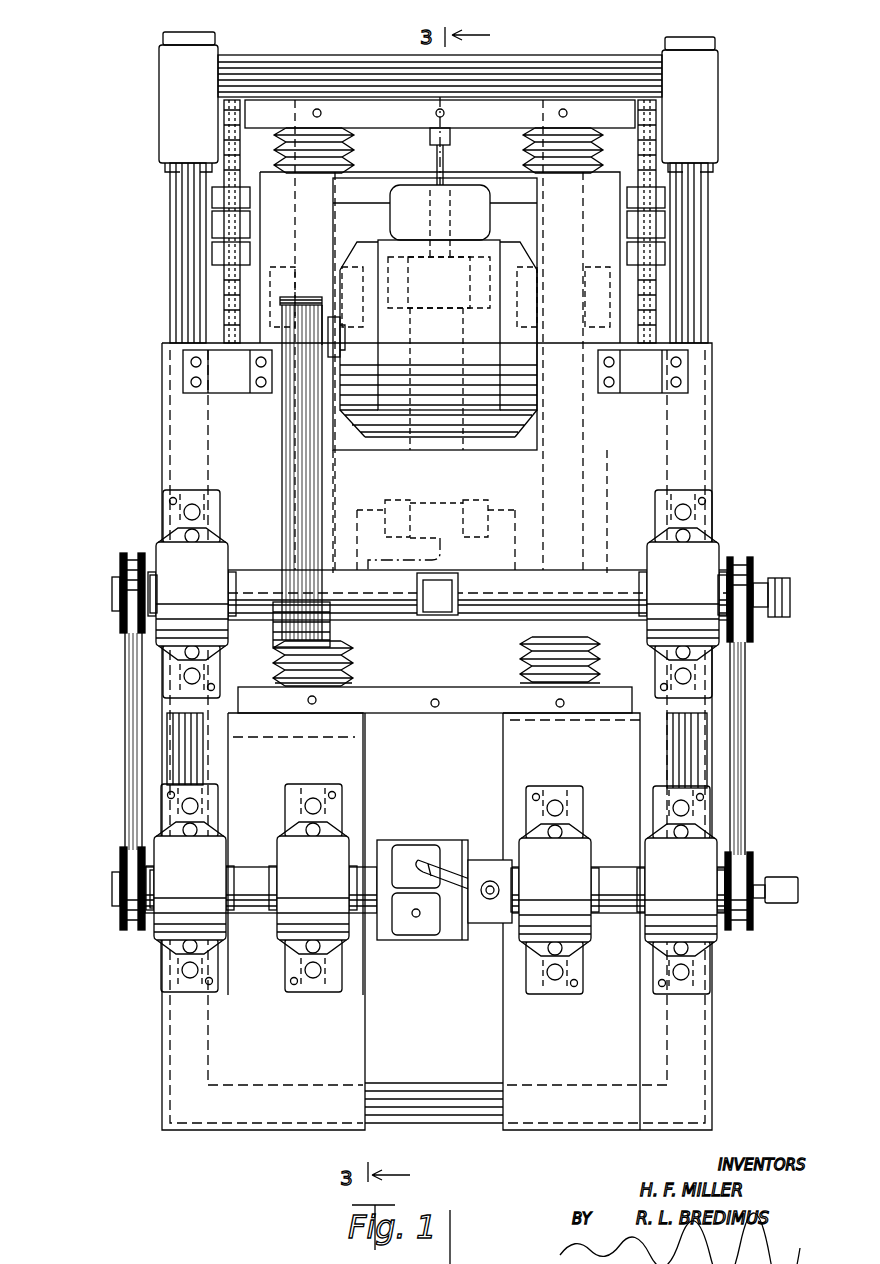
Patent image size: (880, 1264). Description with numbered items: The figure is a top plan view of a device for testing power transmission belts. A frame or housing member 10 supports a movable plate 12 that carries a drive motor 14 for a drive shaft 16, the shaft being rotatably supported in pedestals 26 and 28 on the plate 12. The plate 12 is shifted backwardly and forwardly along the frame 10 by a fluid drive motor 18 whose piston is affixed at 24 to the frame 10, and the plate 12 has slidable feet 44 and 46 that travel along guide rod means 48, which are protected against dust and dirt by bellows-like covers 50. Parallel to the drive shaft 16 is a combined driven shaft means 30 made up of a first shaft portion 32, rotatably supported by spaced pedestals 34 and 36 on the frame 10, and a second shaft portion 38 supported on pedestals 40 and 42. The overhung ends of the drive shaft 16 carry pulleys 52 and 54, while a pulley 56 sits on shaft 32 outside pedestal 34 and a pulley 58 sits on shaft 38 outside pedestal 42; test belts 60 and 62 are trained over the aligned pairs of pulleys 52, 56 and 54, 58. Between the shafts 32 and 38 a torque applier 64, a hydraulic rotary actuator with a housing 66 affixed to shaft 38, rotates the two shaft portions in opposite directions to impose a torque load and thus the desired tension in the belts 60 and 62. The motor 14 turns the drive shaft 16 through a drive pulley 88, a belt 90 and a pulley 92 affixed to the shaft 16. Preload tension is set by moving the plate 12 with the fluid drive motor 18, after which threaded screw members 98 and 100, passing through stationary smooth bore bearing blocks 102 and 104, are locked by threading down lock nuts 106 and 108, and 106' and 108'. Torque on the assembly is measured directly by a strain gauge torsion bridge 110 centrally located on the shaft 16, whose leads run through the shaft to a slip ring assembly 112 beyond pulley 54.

The frame or housing member 10 is at (570, 70).
The movable plate 12 is at (712, 440).
The drive motor 14 is at (450, 349).
The drive shaft 16 is at (500, 621).
The fluid drive motor 18 is at (463, 478).
The piston attachment point 24 is at (446, 124).
The pedestal 26 is at (180, 563).
The pedestal 28 is at (705, 640).
The combined driven shaft means 30 is at (474, 940).
The first shaft portion 32 is at (255, 920).
The pedestal 34 is at (176, 935).
The pedestal 36 is at (300, 858).
The second shaft portion 38 is at (620, 920).
The pedestal 40 is at (535, 925).
The pedestal 42 is at (672, 860).
The slidable foot 44 is at (278, 522).
The slidable foot 46 is at (279, 265).
The guide rod means 48 is at (333, 479).
The bellows-like cover 50 is at (352, 674).
The pulley 52 is at (128, 556).
The pulley 54 is at (755, 628).
The pulley 56 is at (114, 935).
The pulley 58 is at (753, 925).
The transmission belt 60 is at (125, 737).
The transmission belt 62 is at (744, 742).
The torque applier 64 is at (426, 835).
The housing 66 is at (783, 578).
The drive pulley 88 is at (283, 392).
The belt 90 is at (290, 456).
The pulley 92 is at (336, 636).
The threaded screw member 98 is at (216, 291).
The threaded screw member 100 is at (655, 292).
The bearing block 102 is at (212, 223).
The bearing block 104 is at (665, 225).
The lock nut 106 is at (176, 250).
The lock nut 106' is at (708, 254).
The lock nut 108 is at (176, 198).
The lock nut 108' is at (708, 199).
The strain gauge torsion bridge 110 is at (440, 617).
The slip ring assembly 112 is at (790, 583).